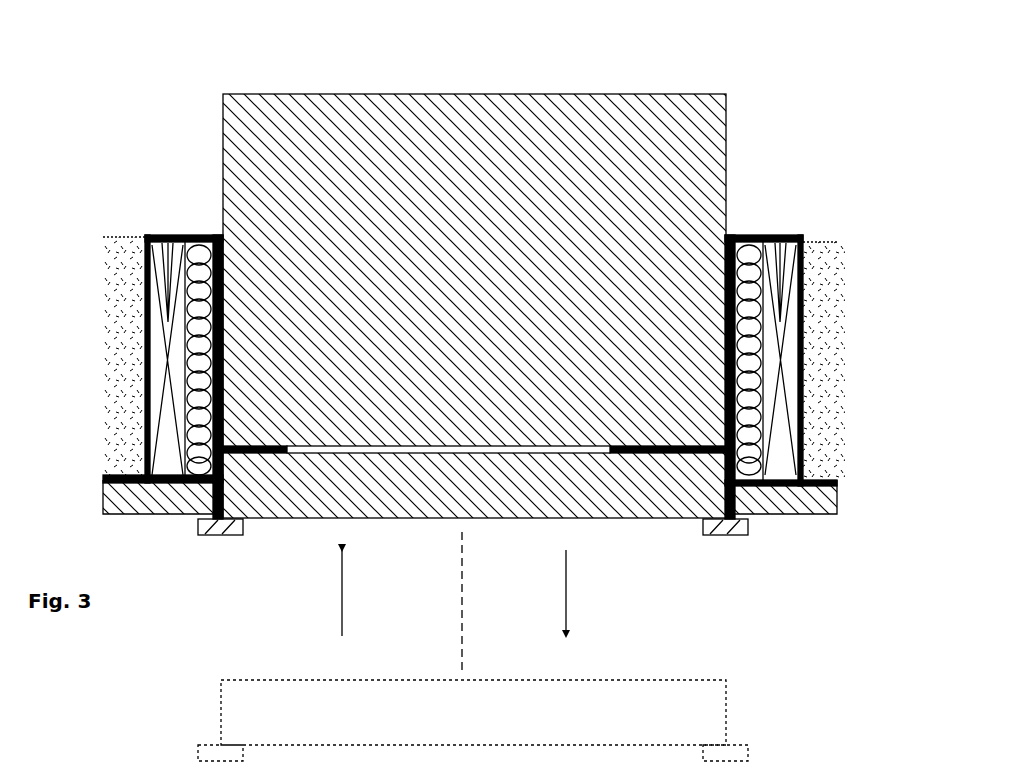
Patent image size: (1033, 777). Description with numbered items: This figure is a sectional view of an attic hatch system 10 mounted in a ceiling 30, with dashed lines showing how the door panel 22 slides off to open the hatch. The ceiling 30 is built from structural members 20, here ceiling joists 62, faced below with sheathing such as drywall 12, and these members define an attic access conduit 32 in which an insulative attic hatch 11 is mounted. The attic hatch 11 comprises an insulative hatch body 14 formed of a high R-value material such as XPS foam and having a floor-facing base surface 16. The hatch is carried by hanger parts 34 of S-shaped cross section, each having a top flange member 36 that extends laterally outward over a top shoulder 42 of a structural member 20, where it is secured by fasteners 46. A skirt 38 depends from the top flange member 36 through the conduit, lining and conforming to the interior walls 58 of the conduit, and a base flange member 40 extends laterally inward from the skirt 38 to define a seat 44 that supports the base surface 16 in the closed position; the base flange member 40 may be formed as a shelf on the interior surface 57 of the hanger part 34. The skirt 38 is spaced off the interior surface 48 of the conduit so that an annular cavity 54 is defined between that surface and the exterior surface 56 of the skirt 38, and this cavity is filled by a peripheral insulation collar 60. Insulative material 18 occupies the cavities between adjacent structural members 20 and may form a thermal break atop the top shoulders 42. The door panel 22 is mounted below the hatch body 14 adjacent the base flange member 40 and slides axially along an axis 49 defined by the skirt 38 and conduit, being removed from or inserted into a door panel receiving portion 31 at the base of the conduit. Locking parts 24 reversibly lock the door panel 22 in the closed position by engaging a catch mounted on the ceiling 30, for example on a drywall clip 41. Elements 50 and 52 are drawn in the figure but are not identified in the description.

The attic hatch system 10 is at (140, 78).
The insulative attic hatch 11 is at (203, 62).
The drywall 12 is at (825, 496).
The insulative hatch body 14 is at (540, 118).
The base surface 16 is at (605, 450).
The insulative material 18 is at (113, 237).
The structural members 20 is at (148, 345).
The door panel 22 is at (662, 500).
The locking parts 24 is at (218, 535).
The ceiling 30 is at (122, 478).
The door panel receiving portion 31 is at (225, 470).
The attic access conduit 32 is at (230, 497).
The hanger parts 34 is at (735, 237).
The top flange member 36 is at (762, 238).
The skirt 38 is at (768, 318).
The base flange member 40 is at (673, 447).
The drywall clip 41 is at (197, 512).
The top shoulder 42 is at (800, 258).
The seat 44 is at (737, 410).
The fasteners 46 is at (160, 242).
The interior surface 48 is at (190, 333).
The axis 49 is at (466, 565).
The top wall 50 is at (748, 237).
The spring end 52 is at (667, 447).
The annular cavity 54 is at (205, 430).
The exterior surface 56 is at (185, 293).
The interior surface 57 is at (225, 310).
The interior walls 58 is at (180, 403).
The peripheral insulation collar 60 is at (198, 240).
The ceiling joists 62 is at (785, 447).